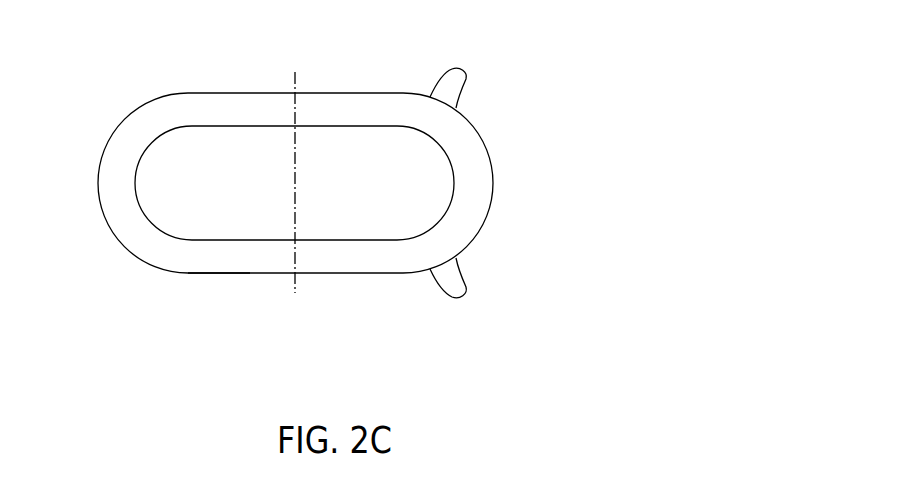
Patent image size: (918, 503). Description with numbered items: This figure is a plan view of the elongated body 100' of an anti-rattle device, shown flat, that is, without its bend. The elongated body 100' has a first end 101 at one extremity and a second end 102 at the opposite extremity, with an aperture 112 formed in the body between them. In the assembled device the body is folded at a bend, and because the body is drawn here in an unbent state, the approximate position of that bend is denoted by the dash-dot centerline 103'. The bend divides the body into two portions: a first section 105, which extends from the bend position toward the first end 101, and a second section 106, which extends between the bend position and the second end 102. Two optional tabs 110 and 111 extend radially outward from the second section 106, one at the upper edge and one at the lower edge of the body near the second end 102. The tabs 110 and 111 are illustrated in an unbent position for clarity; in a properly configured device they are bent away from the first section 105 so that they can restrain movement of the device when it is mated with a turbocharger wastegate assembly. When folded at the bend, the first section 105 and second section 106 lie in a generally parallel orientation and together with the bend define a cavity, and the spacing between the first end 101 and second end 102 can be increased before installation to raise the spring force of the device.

The elongated body 100' is at (410, 142).
The first end 101 is at (98, 180).
The second end 102 is at (493, 182).
The approximate position of bend 103' is at (282, 224).
The first section 105 is at (150, 255).
The second section 106 is at (402, 262).
The tab 110 is at (460, 76).
The tab 111 is at (460, 290).
The aperture 112 is at (387, 143).